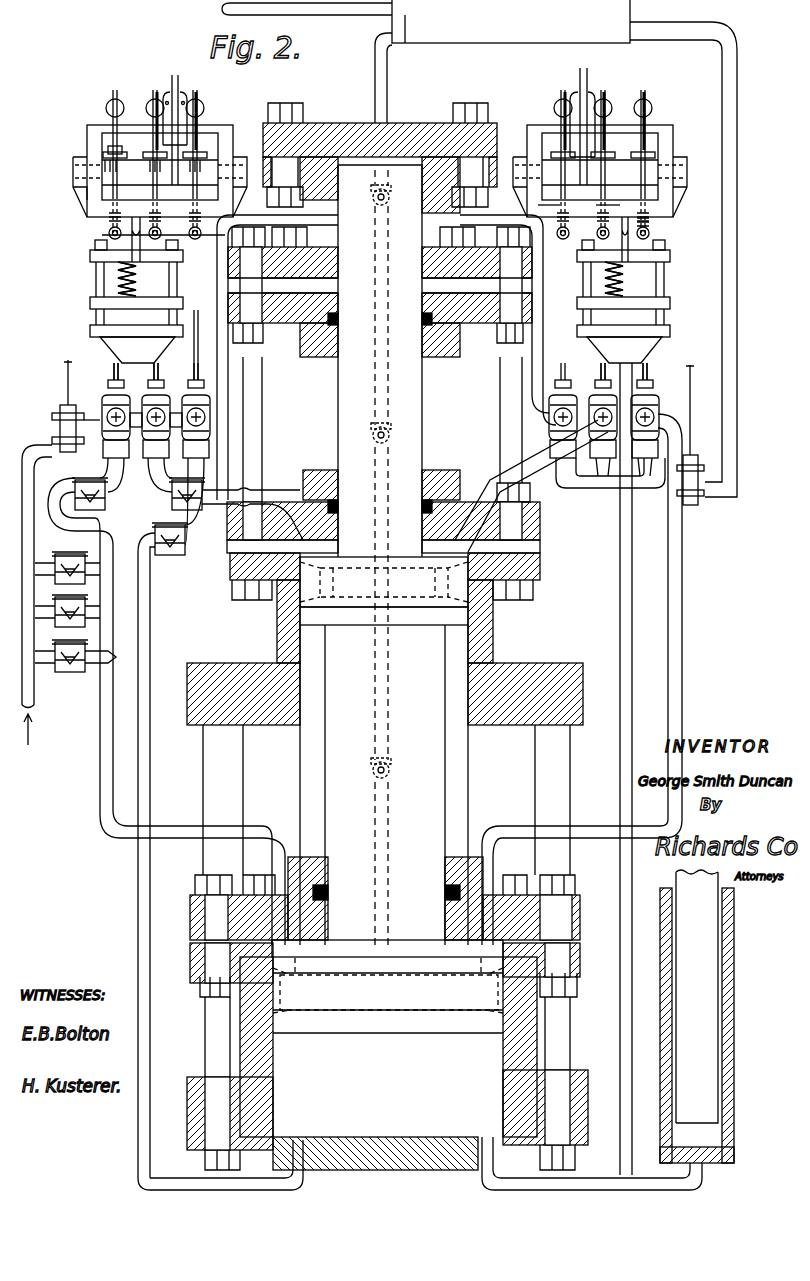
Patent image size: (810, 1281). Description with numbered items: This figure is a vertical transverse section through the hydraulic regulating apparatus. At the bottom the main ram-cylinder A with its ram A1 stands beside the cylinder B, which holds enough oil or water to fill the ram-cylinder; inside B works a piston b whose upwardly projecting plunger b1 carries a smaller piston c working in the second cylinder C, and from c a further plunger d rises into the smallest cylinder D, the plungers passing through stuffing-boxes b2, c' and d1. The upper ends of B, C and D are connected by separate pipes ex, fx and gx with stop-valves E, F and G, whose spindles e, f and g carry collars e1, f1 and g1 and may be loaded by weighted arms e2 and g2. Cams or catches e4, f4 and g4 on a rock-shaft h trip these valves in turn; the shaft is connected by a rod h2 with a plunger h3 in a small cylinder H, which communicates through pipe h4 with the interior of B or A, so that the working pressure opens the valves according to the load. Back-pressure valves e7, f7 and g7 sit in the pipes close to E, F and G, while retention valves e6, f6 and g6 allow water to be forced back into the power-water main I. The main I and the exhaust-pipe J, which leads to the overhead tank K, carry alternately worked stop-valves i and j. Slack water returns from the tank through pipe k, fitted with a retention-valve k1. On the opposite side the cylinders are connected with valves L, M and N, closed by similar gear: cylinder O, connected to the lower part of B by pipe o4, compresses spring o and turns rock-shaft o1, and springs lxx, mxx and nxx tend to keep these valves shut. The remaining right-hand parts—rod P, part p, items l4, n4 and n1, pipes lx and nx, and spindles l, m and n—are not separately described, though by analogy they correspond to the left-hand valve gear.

The storage-reservoir K is at (426, 21).
The pipe k is at (389, 96).
The retention-valve k1 is at (371, 770).
The smallest cylinder D is at (380, 223).
The stuffing-box d1 is at (445, 357).
The plunger d is at (380, 361).
The second cylinder C is at (495, 660).
The smaller piston c is at (384, 591).
The plunger b1 is at (384, 785).
The stuffing-box b2 is at (468, 858).
The cylinder B is at (387, 1056).
The piston b is at (388, 985).
The pipe o4 is at (620, 620).
The main ram-cylinder A is at (635, 937).
The ram A1 is at (697, 1016).
The small pipe h4 is at (140, 765).
The pipe ex is at (110, 718).
The power-water-supply main I is at (58, 540).
The stop-valve i is at (60, 418).
The stop-valve E is at (104, 410).
The stop-valve F is at (162, 418).
The stop-valve G is at (210, 420).
The valve spindle e is at (112, 370).
The valve spindle f is at (157, 240).
The valve spindle g is at (212, 320).
The back-pressure valve e7 is at (80, 480).
The back-pressure valve f7 is at (172, 500).
The back-pressure valve g7 is at (172, 556).
The retention valve g6 is at (88, 552).
The retention valve f6 is at (87, 600).
The retention valve e6 is at (72, 672).
The pipe fx is at (292, 490).
The pipe gx is at (229, 378).
The small cylinder H is at (136, 301).
The plunger h3 is at (118, 282).
The rock-shaft h is at (212, 165).
The weighted arm e2 is at (115, 92).
The collar f1 is at (162, 170).
The weighted arm g2 is at (198, 97).
The plunger rod P is at (178, 123).
The pin p is at (156, 92).
The collar g1 is at (200, 135).
The collar e1 is at (108, 153).
The cam e4 is at (105, 168).
The cam f4 is at (155, 175).
The cam g4 is at (198, 175).
The rod h2 is at (135, 225).
The right valve box n4 is at (650, 180).
The valve stem l4 is at (555, 160).
The valve stem n1 is at (598, 172).
The rock-shaft o1 is at (655, 165).
The spring lxx is at (547, 209).
The spring mxx is at (599, 209).
The spring nxx is at (652, 222).
The pipe l× lx is at (520, 222).
The pipe l is at (560, 312).
The operating-cylinder O is at (623, 301).
The spring o is at (628, 282).
The valve L is at (552, 410).
The valve M is at (603, 410).
The valve N is at (645, 410).
The valve stem m is at (600, 366).
The valve stem n is at (650, 366).
The stuffing-box c' is at (526, 486).
The pipe n× nx is at (674, 634).
The stop-valve j is at (698, 460).
The exhaust-pipe J is at (722, 318).